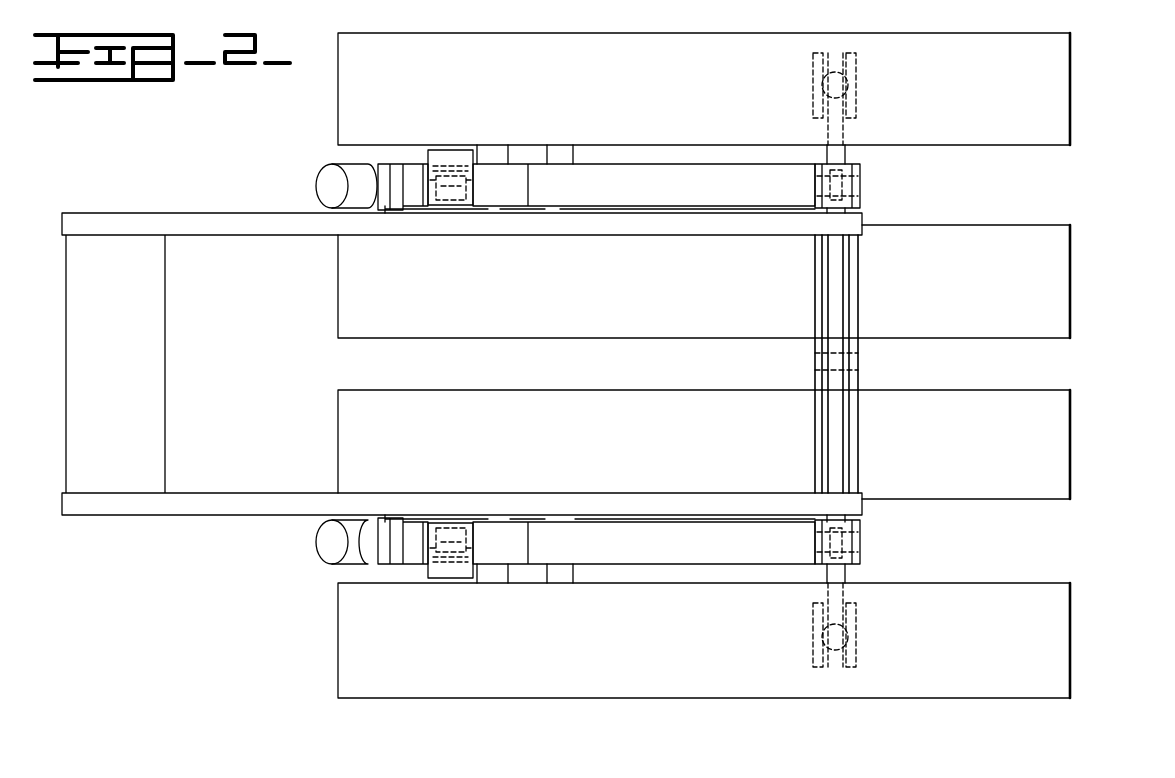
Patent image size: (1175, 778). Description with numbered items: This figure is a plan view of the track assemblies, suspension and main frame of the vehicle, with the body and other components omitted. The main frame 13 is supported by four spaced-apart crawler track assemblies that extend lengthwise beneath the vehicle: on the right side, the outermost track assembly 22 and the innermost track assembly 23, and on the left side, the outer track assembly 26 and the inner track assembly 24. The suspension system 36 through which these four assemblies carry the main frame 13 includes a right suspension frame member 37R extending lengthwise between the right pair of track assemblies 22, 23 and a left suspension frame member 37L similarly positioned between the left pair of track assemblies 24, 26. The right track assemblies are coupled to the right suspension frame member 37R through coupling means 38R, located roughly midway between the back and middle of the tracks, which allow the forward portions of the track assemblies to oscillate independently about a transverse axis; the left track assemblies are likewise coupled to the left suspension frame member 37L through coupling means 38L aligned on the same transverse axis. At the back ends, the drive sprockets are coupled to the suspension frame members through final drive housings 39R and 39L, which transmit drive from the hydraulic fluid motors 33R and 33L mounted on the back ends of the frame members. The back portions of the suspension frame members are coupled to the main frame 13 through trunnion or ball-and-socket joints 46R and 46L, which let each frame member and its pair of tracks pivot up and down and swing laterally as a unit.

The main frame 13 is at (160, 516).
The crawler track assembly 22 is at (1074, 645).
The crawler track assembly 23 is at (1074, 450).
The crawler track assembly 24 is at (1074, 292).
The crawler track assembly 26 is at (1074, 104).
The fluid motor 33L is at (330, 190).
The fluid motor 33R is at (330, 548).
The suspension system 36 is at (302, 200).
The left suspension frame member 37L is at (676, 202).
The right suspension frame member 37R is at (688, 556).
The coupling means 38L is at (576, 160).
The coupling means 38R is at (578, 568).
The final drive housing 39L is at (488, 155).
The final drive housing 39R is at (390, 570).
The trunnion or ball-and-socket joint 46L is at (446, 210).
The trunnion or ball-and-socket joint 46R is at (447, 518).